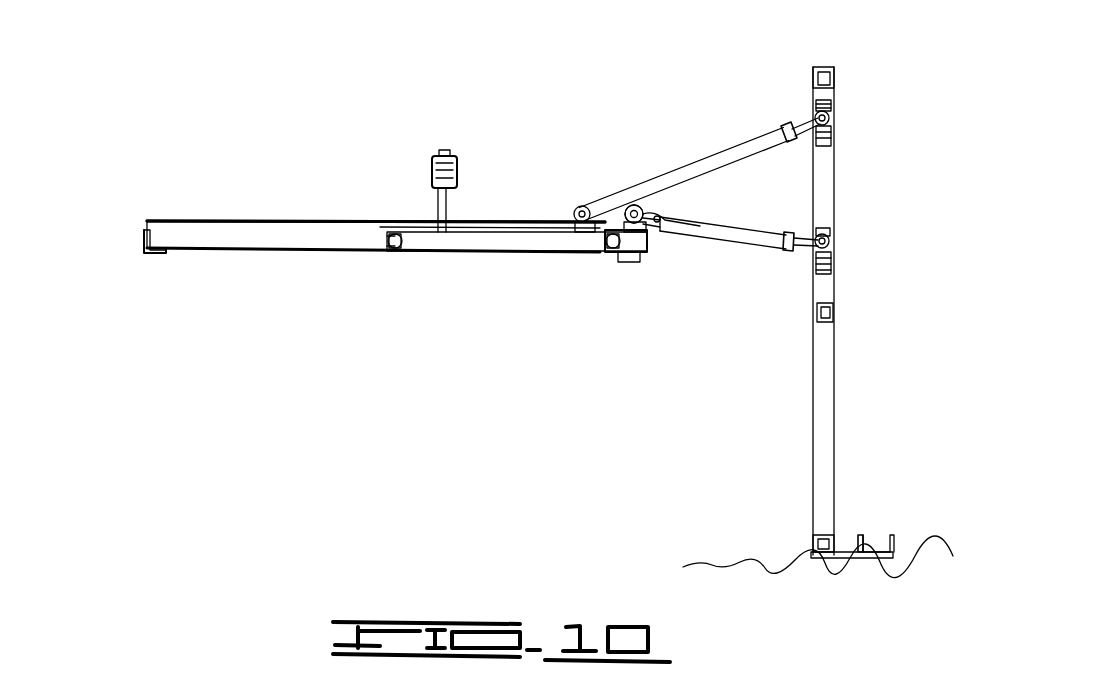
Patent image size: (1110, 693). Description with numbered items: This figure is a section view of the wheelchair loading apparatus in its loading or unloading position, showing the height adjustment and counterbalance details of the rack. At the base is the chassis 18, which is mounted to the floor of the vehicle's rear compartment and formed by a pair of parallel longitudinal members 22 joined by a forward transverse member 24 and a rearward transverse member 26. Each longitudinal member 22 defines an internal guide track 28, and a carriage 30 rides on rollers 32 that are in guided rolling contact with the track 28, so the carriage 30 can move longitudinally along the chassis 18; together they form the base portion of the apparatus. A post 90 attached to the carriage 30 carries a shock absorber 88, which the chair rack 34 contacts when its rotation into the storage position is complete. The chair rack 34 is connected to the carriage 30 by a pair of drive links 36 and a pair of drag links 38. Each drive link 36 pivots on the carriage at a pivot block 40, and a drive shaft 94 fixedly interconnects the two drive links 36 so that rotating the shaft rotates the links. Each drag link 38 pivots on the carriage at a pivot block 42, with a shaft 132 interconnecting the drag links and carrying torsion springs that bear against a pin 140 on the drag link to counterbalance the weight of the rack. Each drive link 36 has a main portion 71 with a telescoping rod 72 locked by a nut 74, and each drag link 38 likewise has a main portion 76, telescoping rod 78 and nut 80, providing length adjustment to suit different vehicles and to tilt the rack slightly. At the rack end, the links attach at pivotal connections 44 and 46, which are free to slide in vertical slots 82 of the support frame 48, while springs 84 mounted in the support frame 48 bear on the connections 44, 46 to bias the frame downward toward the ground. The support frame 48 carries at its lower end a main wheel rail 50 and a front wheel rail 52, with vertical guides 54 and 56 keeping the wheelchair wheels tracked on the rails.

The chassis 18 is at (183, 218).
The longitudinal member 22 is at (226, 226).
The forward transverse member 24 is at (144, 250).
The rearward transverse member 26 is at (626, 264).
The internal guide track 28 is at (286, 248).
The carriage 30 is at (428, 242).
The rollers 32 is at (390, 243).
The chair rack 34 is at (826, 62).
The drive link 36 is at (672, 185).
The drag link 38 is at (725, 235).
The pivot block 40 is at (586, 220).
The pivot block 42 is at (648, 230).
The pivotal connection 44 is at (831, 113).
The pivotal connection 46 is at (831, 240).
The support frame 48 is at (836, 203).
The main wheel rail 50 is at (846, 560).
The front wheel rail 52 is at (880, 560).
The vertical guide 54 is at (848, 548).
The vertical guide 56 is at (885, 540).
The main portion 71 is at (716, 150).
The telescoping rod 72 is at (806, 118).
The nut 74 is at (783, 125).
The main portion 76 is at (760, 240).
The telescoping rod 78 is at (800, 250).
The nut 80 is at (790, 240).
The vertical slot 82 is at (836, 146).
The spring 84 is at (833, 128).
The shock absorber 88 is at (437, 150).
The post 90 is at (436, 206).
The drive shaft 94 is at (580, 206).
The shaft 132 is at (635, 205).
The pin 140 is at (690, 222).